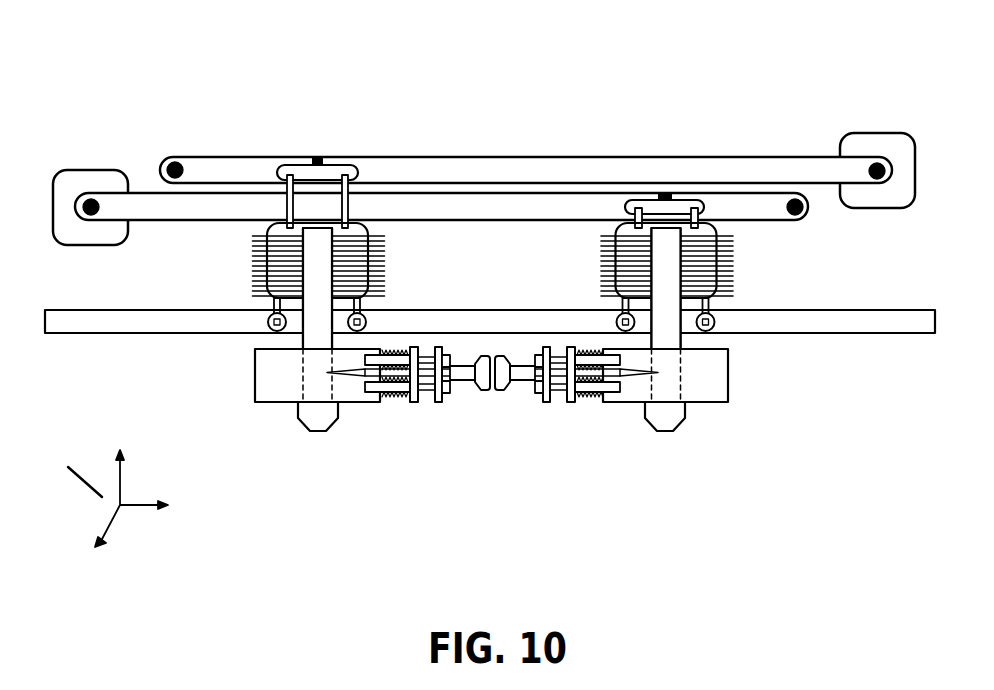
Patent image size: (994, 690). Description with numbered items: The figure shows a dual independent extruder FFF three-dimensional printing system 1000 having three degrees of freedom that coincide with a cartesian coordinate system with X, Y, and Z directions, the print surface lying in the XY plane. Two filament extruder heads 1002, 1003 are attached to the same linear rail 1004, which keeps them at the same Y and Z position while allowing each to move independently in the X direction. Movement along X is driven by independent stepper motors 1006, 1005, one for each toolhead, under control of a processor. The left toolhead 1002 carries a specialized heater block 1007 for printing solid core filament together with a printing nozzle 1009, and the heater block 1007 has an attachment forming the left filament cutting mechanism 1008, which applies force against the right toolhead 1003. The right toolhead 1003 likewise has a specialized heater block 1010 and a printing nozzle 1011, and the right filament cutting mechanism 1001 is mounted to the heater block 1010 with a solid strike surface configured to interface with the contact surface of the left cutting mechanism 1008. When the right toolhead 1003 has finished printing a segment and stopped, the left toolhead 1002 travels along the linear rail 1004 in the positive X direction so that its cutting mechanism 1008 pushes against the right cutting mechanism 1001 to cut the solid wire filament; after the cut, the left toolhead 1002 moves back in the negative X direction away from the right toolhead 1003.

The dual independent extruder FFF 3D printing system 1000 is at (478, 303).
The right filament cutting mechanism 1001 is at (542, 402).
The left filament extruder head 1002 is at (267, 265).
The right filament extruder head 1003 is at (618, 252).
The linear rail 1004 is at (185, 322).
The stepper motor 1005 is at (95, 180).
The stepper motor 1006 is at (882, 143).
The heater block 1007 is at (282, 380).
The left filament cutting mechanism 1008 is at (402, 390).
The printing nozzle 1009 is at (312, 422).
The heater block 1010 is at (710, 388).
The printing nozzle 1011 is at (658, 417).